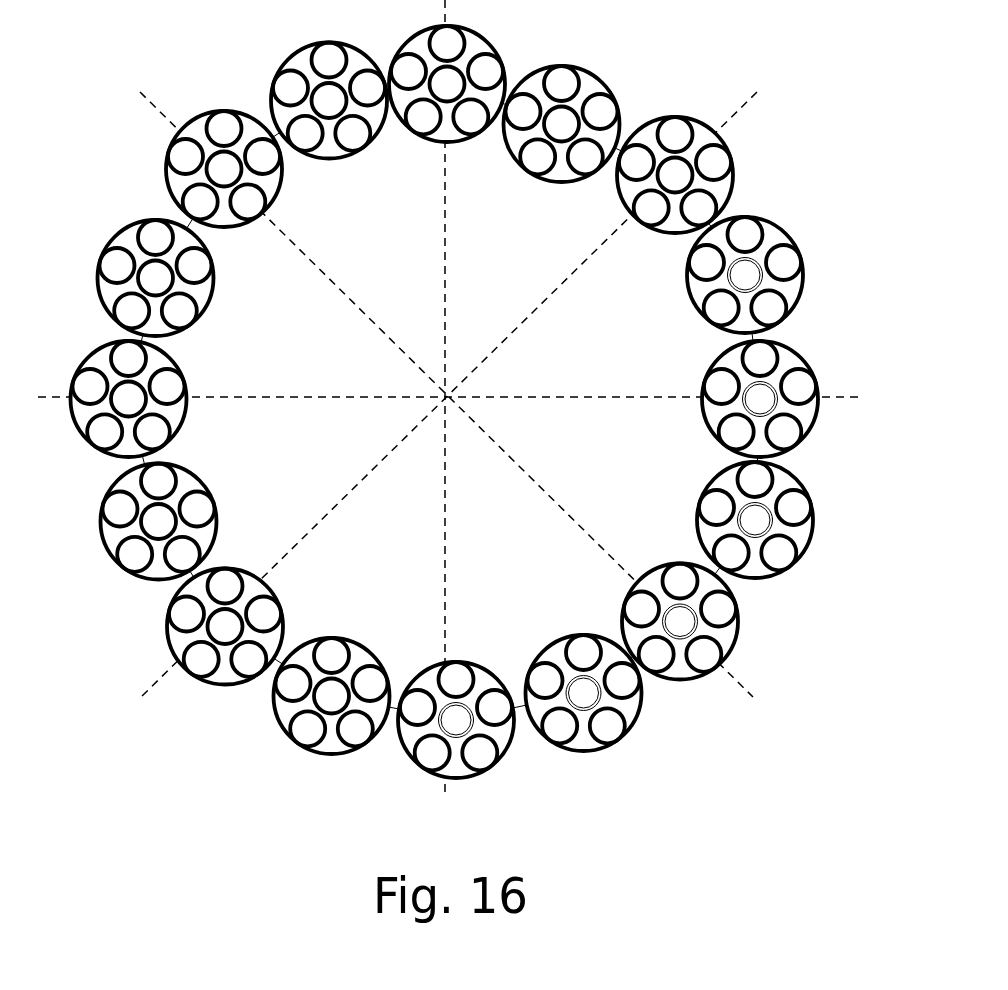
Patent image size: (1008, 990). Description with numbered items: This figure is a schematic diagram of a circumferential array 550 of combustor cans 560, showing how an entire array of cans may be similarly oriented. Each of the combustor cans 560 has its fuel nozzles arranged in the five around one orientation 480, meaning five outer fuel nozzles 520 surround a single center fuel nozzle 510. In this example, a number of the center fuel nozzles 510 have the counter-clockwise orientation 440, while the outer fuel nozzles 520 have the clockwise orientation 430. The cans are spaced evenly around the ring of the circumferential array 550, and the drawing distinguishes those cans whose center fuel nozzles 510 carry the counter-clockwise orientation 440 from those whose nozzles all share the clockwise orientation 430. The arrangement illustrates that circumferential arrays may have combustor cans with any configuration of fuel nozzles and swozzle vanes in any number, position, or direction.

The circumferential array 550 is at (243, 49).
The combustor cans 560 is at (652, 118).
The five around one orientation 480 is at (732, 155).
The clockwise orientation 430 is at (760, 220).
The center fuel nozzles 510 is at (732, 282).
The counter-clockwise orientation 440 is at (763, 282).
The outer fuel nozzles 520 is at (708, 320).